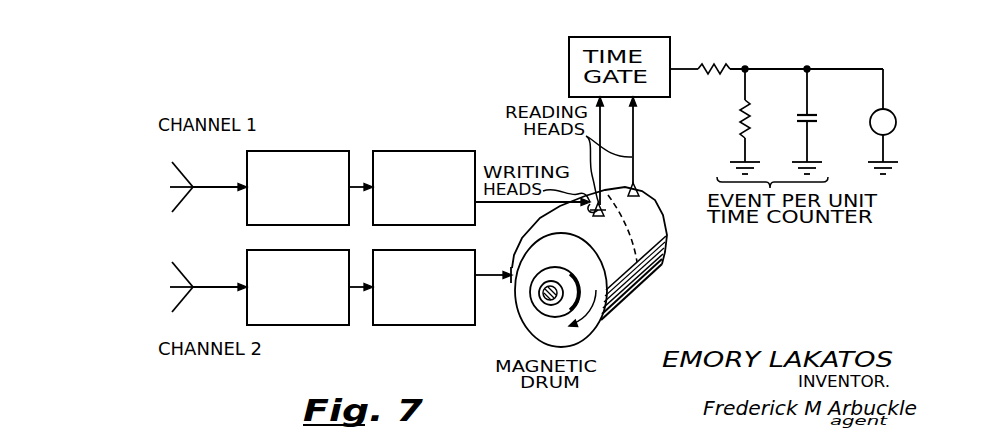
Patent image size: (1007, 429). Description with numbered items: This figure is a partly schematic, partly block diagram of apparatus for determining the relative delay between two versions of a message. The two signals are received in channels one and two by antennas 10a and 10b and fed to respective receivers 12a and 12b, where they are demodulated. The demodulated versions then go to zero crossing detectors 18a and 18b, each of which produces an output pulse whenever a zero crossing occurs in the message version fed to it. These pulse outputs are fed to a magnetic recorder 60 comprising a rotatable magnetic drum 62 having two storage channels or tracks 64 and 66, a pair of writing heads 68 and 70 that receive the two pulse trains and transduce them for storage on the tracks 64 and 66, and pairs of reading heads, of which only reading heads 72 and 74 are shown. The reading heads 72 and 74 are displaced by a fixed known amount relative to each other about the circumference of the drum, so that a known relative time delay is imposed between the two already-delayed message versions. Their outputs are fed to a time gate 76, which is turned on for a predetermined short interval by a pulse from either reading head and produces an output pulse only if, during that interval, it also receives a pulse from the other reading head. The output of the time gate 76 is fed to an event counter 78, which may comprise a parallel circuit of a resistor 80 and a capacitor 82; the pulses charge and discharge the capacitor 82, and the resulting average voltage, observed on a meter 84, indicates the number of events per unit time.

The antenna 10a is at (191, 159).
The antenna 10b is at (190, 260).
The receiver 12a is at (297, 151).
The receiver 12b is at (296, 250).
The zero crossing detector 18a is at (421, 151).
The zero crossing detector 18b is at (423, 250).
The magnetic recorder 60 is at (710, 314).
The rotatable magnetic drum 62 is at (527, 324).
The storage track 64 is at (613, 310).
The storage track 66 is at (652, 282).
The writing head 68 is at (508, 268).
The writing head 70 is at (596, 205).
The reading head 72 is at (607, 156).
The reading head 74 is at (636, 183).
The time gate 76 is at (671, 50).
The event counter 78 is at (808, 50).
The resistor 80 is at (745, 112).
The capacitor 82 is at (807, 112).
The meter 84 is at (890, 112).